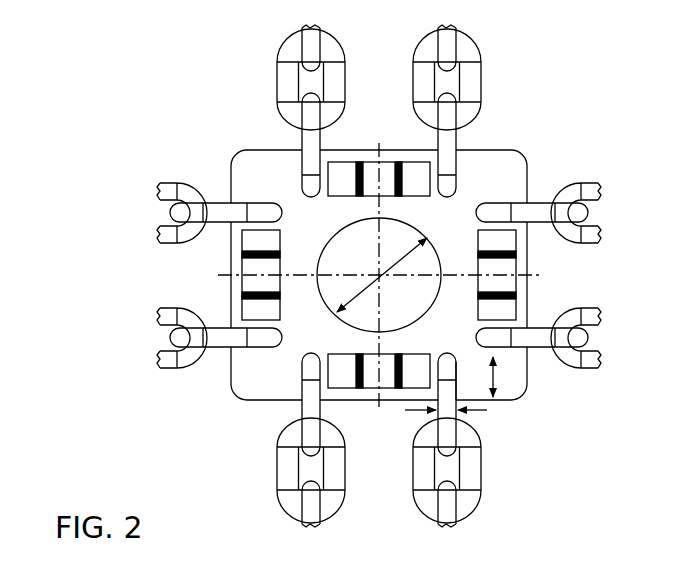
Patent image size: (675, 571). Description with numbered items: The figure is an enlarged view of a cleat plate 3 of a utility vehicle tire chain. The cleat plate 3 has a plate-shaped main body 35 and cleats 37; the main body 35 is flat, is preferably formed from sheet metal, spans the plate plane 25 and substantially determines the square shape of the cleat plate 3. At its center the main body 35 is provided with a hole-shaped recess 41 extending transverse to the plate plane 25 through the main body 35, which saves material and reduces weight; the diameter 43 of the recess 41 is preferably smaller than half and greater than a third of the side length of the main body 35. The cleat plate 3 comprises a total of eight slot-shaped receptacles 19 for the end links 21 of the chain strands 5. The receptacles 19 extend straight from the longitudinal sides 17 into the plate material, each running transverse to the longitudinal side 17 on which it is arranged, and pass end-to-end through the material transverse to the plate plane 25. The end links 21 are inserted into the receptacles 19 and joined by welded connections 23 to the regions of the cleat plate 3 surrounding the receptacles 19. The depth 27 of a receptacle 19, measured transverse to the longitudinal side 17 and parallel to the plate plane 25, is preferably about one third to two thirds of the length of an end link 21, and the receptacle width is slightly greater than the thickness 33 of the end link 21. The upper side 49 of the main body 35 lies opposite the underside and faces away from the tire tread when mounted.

The cleat plate 3 is at (196, 136).
The chain strands 5 is at (280, 37).
The longitudinal sides 17 is at (352, 161).
The receptacles 19 is at (311, 200).
The end links 21 is at (300, 175).
The welded connections 23 is at (461, 382).
The plate plane 25 is at (450, 349).
The depth 27 is at (498, 372).
The thickness 33 is at (480, 412).
The main body 35 is at (248, 381).
The cleats 37 is at (398, 161).
The recess 41 is at (371, 262).
The diameter 43 is at (368, 293).
The upper side 49 is at (470, 309).